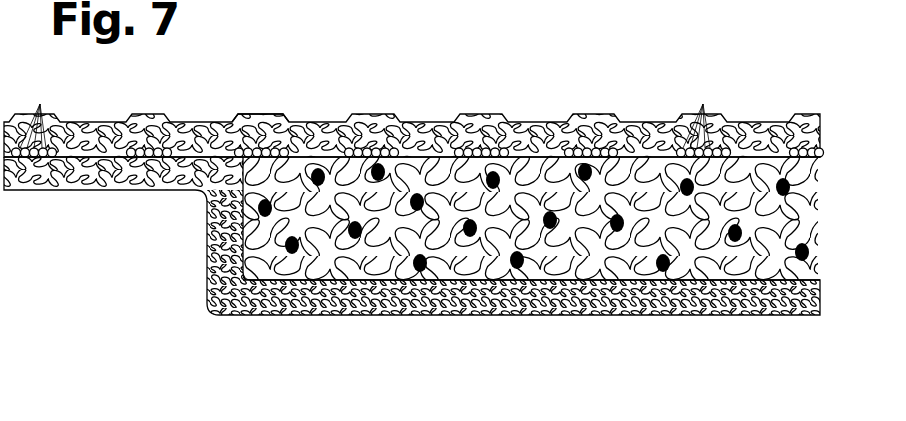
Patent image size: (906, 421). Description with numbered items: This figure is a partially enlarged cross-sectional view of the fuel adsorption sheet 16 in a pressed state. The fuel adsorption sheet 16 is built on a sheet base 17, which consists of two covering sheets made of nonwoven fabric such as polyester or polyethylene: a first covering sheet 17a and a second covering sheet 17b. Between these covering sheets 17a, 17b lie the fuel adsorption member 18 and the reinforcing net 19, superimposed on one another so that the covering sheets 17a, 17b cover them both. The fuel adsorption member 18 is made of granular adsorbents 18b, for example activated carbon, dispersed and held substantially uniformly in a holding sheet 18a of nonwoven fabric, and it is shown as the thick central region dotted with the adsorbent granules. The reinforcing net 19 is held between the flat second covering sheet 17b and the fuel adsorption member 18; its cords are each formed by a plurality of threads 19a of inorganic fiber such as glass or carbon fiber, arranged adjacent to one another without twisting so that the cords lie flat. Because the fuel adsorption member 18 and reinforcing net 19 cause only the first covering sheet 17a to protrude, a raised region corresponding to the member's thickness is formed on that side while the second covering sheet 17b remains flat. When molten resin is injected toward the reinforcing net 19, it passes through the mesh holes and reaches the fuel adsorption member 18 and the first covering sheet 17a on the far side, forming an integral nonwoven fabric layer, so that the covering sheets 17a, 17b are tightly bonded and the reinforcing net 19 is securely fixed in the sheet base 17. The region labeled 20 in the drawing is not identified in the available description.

The fuel adsorption sheet 16 is at (262, 114).
The sheet base 17 is at (340, 316).
The first covering sheet 17a is at (477, 316).
The second covering sheet 17b is at (443, 125).
The fuel adsorption member 18 is at (557, 272).
The holding sheet 18a is at (650, 285).
The granular adsorbents 18b is at (796, 262).
The reinforcing net 19 is at (144, 149).
The threads 19a is at (374, 112).
The lower layer 20 is at (110, 192).